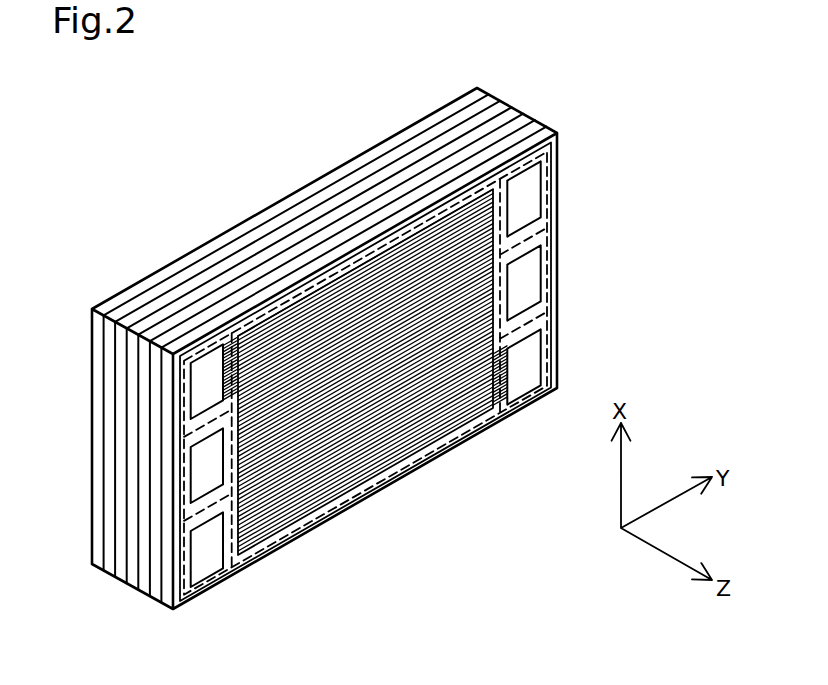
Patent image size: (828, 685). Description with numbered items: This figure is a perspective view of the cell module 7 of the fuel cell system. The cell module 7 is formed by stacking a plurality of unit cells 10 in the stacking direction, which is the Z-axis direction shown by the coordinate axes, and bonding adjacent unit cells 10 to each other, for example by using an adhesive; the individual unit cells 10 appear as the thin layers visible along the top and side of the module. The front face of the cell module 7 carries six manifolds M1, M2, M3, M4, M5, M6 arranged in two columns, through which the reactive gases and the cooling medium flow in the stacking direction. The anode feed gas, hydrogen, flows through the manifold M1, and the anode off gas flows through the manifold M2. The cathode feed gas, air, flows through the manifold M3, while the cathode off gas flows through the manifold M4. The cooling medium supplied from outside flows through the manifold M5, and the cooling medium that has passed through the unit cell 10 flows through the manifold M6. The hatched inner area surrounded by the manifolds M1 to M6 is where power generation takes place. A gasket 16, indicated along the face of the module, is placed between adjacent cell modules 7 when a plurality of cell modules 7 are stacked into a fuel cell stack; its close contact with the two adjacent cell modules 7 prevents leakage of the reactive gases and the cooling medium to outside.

The cell module 7 is at (658, 66).
The unit cell 10 is at (477, 90).
The gasket 16 is at (381, 482).
The manifold M1 is at (527, 365).
The manifold M2 is at (203, 375).
The manifold M3 is at (207, 545).
The manifold M4 is at (527, 198).
The manifold M5 is at (527, 282).
The manifold M6 is at (205, 463).